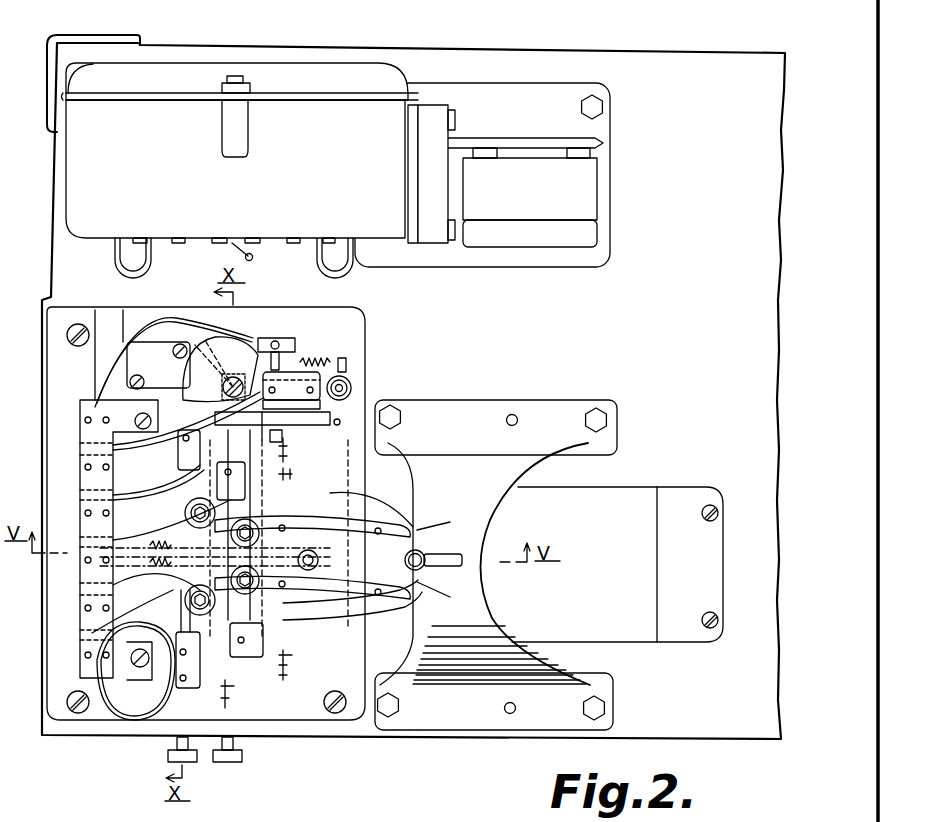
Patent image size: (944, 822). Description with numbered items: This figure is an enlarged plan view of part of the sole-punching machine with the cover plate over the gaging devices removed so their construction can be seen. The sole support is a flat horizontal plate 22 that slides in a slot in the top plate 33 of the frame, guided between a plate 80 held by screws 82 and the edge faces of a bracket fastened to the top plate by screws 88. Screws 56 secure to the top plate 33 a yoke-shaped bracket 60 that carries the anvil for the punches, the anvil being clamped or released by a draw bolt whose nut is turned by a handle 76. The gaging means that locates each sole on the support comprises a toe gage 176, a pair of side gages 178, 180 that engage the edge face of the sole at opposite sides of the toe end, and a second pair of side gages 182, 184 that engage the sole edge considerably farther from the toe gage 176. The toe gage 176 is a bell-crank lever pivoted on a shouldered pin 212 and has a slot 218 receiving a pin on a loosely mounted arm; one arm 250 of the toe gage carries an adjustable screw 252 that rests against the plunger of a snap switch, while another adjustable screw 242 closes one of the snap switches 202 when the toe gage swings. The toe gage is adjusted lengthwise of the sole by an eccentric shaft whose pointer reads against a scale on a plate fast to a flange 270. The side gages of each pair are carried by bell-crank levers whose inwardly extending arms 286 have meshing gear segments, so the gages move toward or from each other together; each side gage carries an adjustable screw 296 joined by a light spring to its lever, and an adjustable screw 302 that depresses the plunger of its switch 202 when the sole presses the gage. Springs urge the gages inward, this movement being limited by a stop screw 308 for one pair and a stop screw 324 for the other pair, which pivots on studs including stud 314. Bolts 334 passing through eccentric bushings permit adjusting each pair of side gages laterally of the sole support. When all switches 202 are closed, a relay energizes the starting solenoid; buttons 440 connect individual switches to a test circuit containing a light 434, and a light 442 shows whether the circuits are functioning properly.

The sole support plate 22 is at (610, 498).
The top plate 33 is at (724, 735).
The screws 56 is at (393, 408).
The yoke-shaped bracket 60 is at (456, 489).
The handle 76 is at (440, 561).
The plate 80 is at (712, 566).
The screws 82 is at (720, 513).
The screws 88 is at (80, 324).
The toe gage 176 is at (343, 432).
The side gage 178 is at (330, 606).
The side gage 180 is at (328, 520).
The side gage 182 is at (352, 626).
The side gage 184 is at (372, 498).
The switches 202 is at (308, 378).
The shouldered pin 212 is at (348, 380).
The slot 218 is at (340, 420).
The adjustable screw 242 is at (278, 352).
The arm 250 is at (282, 428).
The adjustable screw 252 is at (285, 440).
The flange 270 is at (210, 350).
The arms 286 is at (175, 522).
The adjustable screw 296 is at (224, 382).
The adjustable screws 302 is at (290, 473).
The stop screw 308 is at (191, 762).
The stud 314 is at (286, 532).
The stop screw 324 is at (242, 757).
The bolt 334 is at (302, 562).
The light 434 is at (351, 269).
The button 440 is at (176, 244).
The light 442 is at (119, 258).